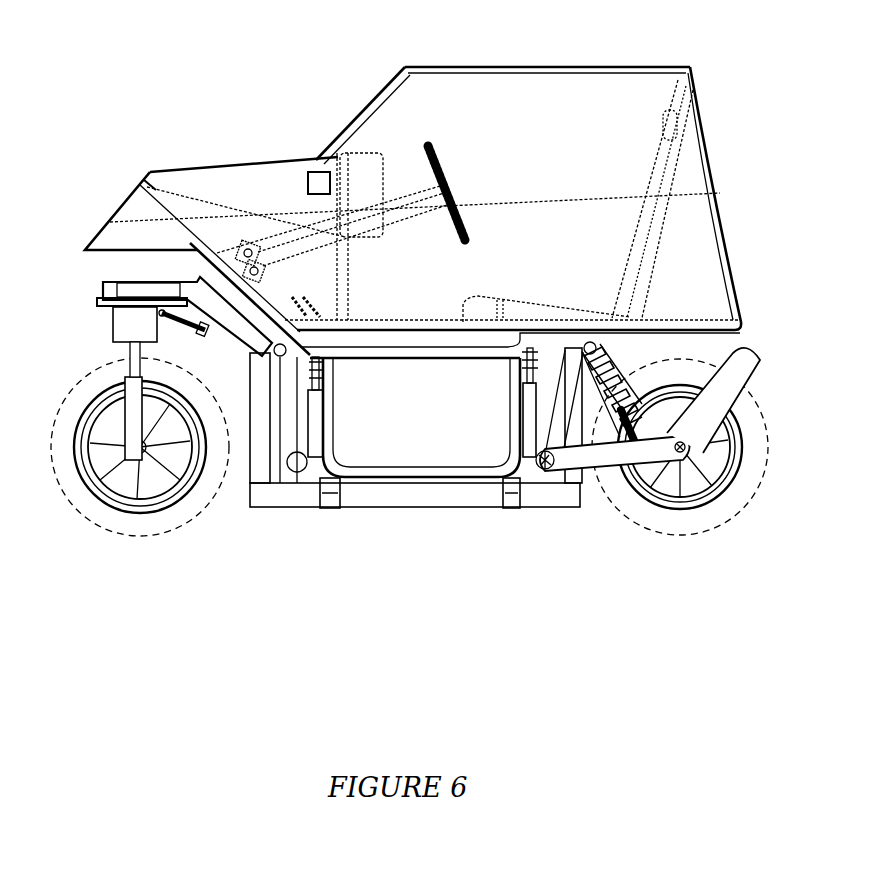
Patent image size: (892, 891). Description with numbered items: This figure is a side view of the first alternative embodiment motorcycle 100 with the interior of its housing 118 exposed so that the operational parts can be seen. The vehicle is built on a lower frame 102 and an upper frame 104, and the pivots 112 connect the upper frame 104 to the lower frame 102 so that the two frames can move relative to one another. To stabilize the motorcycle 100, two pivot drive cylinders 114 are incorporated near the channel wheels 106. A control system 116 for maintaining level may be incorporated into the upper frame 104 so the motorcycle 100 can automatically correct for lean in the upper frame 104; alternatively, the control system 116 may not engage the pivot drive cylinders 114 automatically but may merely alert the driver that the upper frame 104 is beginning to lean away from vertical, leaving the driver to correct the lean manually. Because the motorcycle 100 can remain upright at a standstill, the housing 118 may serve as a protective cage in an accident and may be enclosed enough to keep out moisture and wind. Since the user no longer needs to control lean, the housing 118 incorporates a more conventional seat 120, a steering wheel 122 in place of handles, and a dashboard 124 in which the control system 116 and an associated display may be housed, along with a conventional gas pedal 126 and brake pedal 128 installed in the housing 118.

The motorcycle 100 is at (150, 80).
The lower frame 102 is at (548, 513).
The upper frame 104 is at (375, 487).
The channel wheels 106 is at (152, 522).
The pivots 112 is at (333, 515).
The pivot drive cylinders 114 is at (314, 432).
The control system 116 is at (318, 183).
The housing 118 is at (718, 157).
The seat 120 is at (655, 183).
The steering wheel 122 is at (447, 177).
The dashboard 124 is at (363, 175).
The gas pedal 126 is at (306, 298).
The brake pedal 128 is at (250, 248).